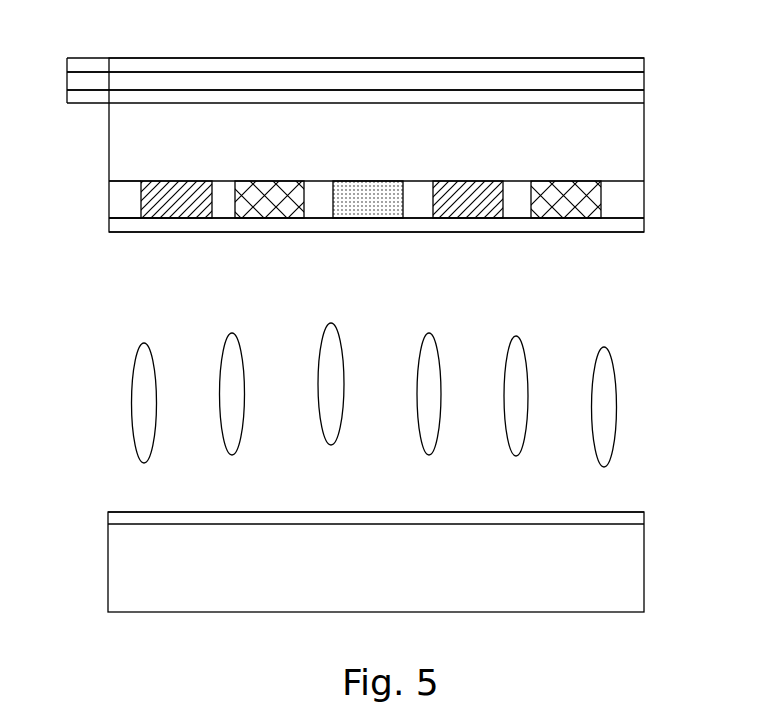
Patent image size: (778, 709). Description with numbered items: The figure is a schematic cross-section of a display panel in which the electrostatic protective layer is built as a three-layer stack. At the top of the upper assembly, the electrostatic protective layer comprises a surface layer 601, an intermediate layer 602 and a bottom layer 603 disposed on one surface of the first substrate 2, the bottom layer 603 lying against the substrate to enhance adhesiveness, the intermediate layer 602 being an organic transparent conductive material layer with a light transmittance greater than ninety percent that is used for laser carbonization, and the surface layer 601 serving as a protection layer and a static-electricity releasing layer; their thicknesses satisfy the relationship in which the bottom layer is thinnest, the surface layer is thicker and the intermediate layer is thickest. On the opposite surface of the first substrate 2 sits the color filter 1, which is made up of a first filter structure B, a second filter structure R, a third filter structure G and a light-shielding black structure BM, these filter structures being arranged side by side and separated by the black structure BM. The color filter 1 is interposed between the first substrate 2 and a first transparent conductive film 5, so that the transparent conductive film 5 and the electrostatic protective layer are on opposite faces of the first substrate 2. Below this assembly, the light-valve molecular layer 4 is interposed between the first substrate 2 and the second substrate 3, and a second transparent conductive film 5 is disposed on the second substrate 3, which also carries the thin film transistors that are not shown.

The color filter 1 is at (377, 173).
The first substrate 2 is at (634, 155).
The second substrate 3 is at (632, 576).
The light-valve molecular layer 4 is at (634, 407).
The transparent conductive film 5 is at (638, 224).
The surface layer 601 is at (640, 63).
The intermediate layer 602 is at (638, 83).
The bottom layer 603 is at (636, 102).
The second filter structure R is at (157, 202).
The third filter structure G is at (278, 188).
The first filter structure B is at (368, 192).
The black structure BM is at (123, 212).